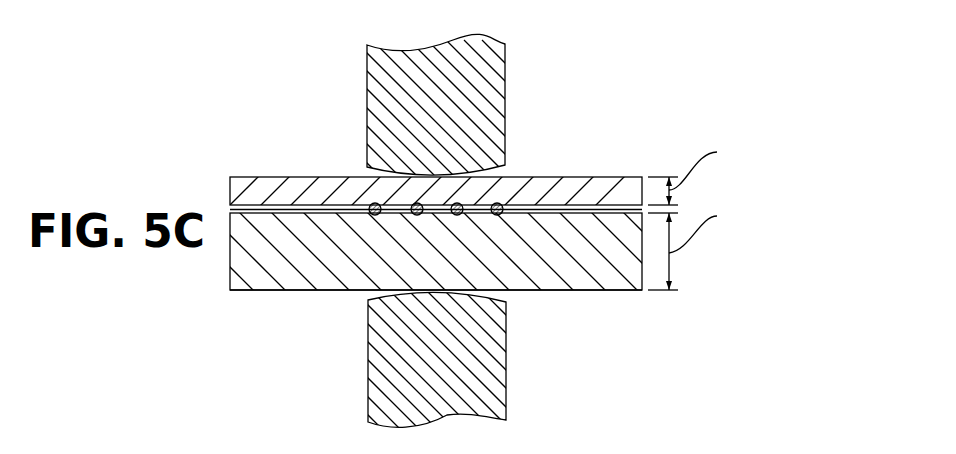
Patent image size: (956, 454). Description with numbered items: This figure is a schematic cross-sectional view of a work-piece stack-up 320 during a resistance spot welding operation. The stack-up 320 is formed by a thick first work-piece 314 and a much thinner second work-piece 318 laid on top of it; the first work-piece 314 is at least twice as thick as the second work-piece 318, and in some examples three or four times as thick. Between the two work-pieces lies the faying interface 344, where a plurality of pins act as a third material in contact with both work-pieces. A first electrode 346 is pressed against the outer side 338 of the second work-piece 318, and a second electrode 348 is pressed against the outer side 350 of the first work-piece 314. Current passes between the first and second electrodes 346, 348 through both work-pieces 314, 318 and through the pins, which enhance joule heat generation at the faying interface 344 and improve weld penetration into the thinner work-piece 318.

The first electrode 346 is at (506, 77).
The second electrode 348 is at (506, 395).
The outer side of the second work-piece 338 is at (545, 177).
The second work-piece 318 is at (595, 188).
The first work-piece 314 is at (610, 285).
The outer side of the first work-piece 350 is at (340, 292).
The faying interface 344 is at (299, 222).
The work-piece stack-up 320 is at (770, 184).